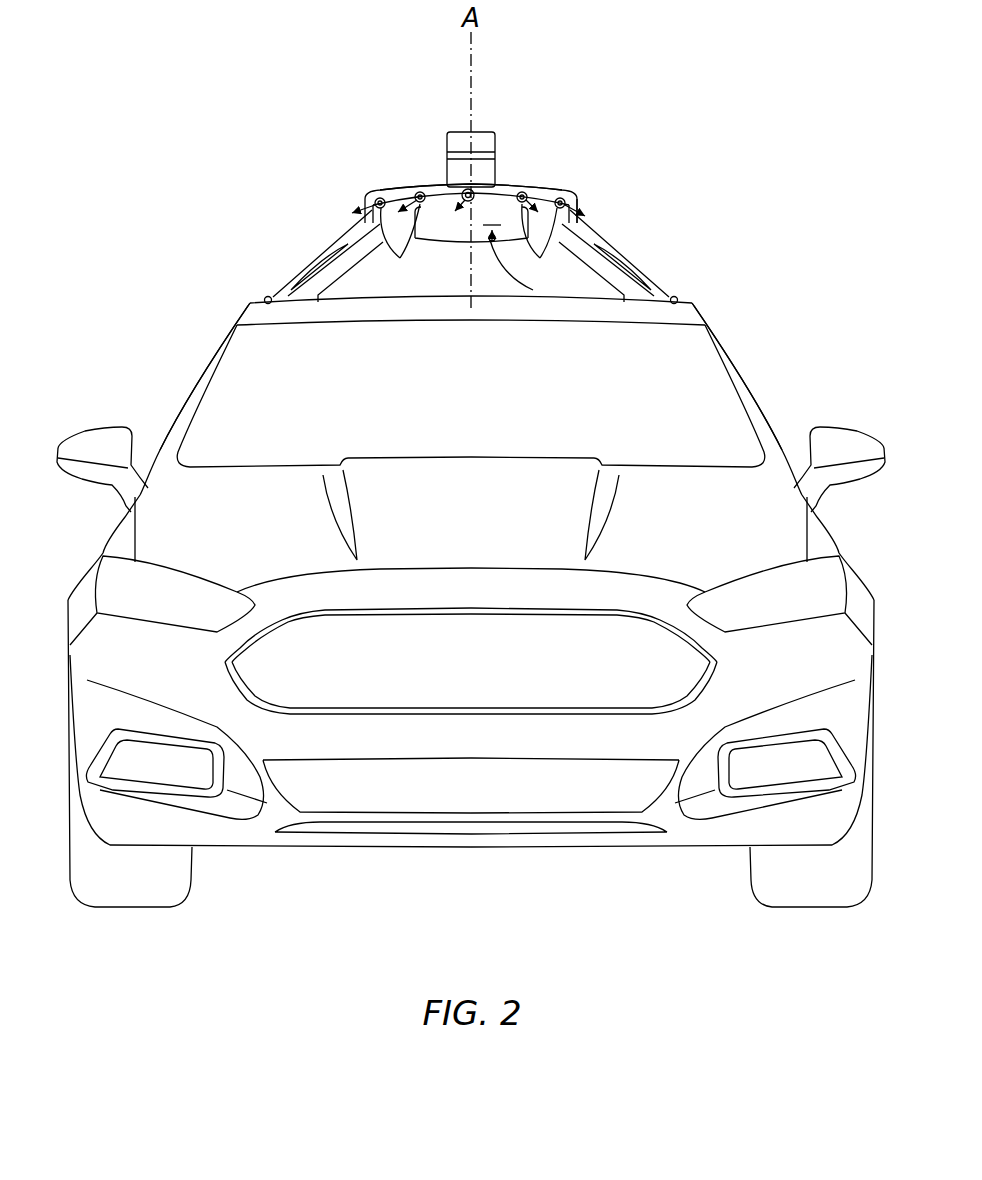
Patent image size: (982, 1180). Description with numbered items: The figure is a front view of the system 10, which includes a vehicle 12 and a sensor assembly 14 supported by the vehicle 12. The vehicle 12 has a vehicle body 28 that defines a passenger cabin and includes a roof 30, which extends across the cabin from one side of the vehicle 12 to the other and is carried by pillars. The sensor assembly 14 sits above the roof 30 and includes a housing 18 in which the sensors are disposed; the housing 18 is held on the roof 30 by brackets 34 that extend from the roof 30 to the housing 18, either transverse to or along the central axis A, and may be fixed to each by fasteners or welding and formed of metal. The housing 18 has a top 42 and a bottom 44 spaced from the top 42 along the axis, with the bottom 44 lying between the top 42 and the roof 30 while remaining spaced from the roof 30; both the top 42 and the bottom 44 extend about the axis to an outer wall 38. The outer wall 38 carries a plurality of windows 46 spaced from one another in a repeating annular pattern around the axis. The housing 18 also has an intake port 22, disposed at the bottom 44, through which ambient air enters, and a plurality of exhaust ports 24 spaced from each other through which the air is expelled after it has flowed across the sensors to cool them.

The system 10 is at (158, 128).
The vehicle 12 is at (77, 553).
The sensor assembly 14 is at (330, 138).
The housing 18 is at (547, 185).
The intake port 22 is at (487, 205).
The exhaust ports 24 is at (381, 198).
The vehicle body 28 is at (167, 427).
The roof 30 is at (253, 306).
The brackets 34 is at (348, 237).
The outer wall 38 is at (575, 203).
The top 42 is at (392, 193).
The bottom 44 is at (460, 215).
The windows 46 is at (472, 194).